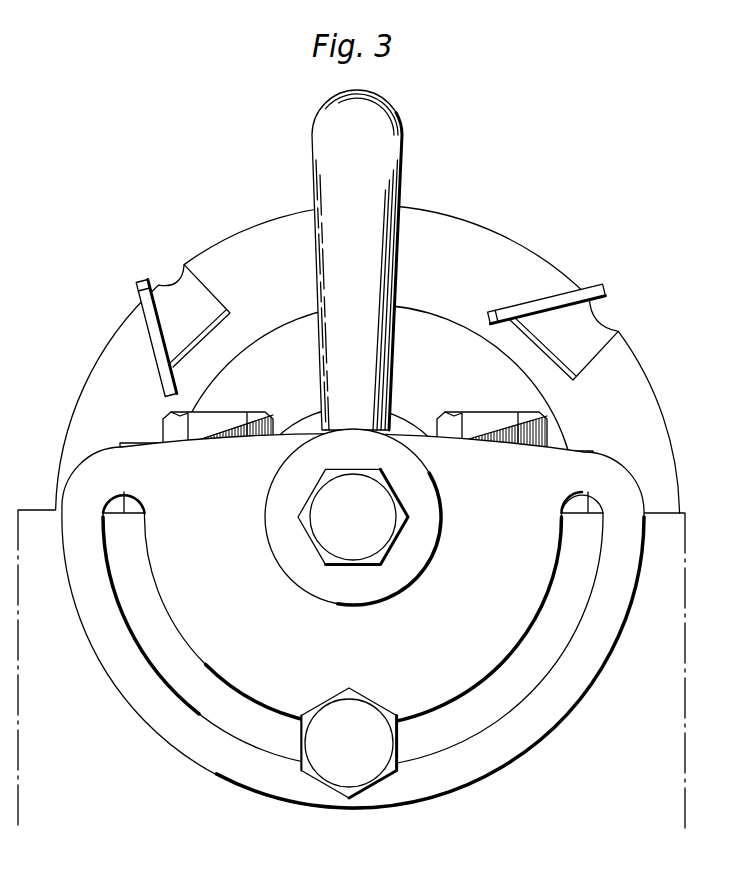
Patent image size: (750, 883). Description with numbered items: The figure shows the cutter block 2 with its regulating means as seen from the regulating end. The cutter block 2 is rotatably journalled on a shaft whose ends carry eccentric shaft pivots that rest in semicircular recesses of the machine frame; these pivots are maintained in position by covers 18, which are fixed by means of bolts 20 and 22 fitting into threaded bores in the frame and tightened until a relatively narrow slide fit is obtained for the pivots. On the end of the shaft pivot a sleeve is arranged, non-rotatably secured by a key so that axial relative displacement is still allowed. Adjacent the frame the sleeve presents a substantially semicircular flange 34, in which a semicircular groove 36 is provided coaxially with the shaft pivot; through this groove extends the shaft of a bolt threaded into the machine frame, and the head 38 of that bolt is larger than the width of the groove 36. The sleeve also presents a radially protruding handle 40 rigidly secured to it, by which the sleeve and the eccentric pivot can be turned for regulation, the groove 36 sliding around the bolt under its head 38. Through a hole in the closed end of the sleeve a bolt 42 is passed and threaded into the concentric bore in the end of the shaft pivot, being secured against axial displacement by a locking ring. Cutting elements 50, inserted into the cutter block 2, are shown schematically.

The cutter block 2 is at (508, 247).
The cover 18 is at (577, 508).
The bolt 20 is at (475, 427).
The bolt 22 is at (174, 426).
The semicircular flange 34 is at (114, 657).
The semicircular groove 36 is at (492, 690).
The bolt head 38 is at (360, 770).
The handle 40 is at (388, 134).
The bolt 42 is at (377, 525).
The cutting elements 50 is at (143, 284).